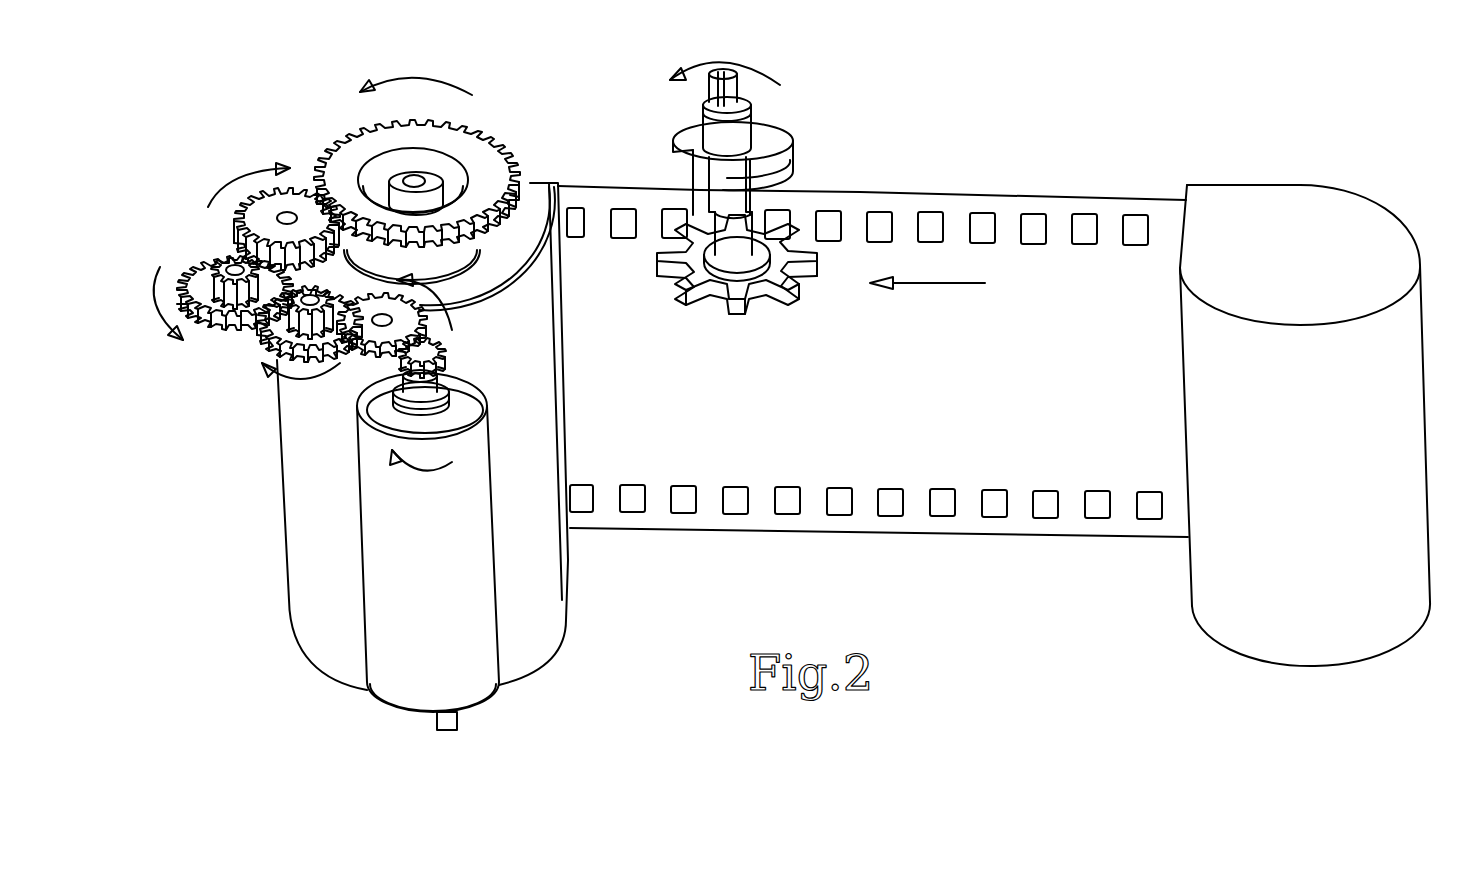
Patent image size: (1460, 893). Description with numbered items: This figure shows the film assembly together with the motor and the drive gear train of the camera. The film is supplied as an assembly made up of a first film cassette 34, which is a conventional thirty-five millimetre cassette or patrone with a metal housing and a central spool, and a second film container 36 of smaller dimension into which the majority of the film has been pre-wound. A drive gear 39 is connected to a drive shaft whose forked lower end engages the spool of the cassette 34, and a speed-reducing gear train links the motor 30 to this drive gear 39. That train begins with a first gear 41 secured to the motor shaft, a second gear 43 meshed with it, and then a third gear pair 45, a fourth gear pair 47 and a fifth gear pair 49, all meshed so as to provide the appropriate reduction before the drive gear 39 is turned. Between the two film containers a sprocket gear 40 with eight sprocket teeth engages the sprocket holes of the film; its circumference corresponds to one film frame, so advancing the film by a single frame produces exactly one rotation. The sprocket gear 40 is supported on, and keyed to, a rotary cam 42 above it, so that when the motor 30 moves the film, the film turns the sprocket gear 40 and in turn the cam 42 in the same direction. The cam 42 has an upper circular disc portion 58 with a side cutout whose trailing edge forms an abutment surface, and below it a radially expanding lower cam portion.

The motor 30 is at (410, 615).
The first film cassette 34 is at (528, 643).
The second film container 36 is at (1287, 645).
The drive gear 39 is at (353, 147).
The sprocket gear 40 is at (775, 290).
The first gear 41 is at (433, 362).
The rotary cam 42 is at (773, 147).
The second gear 43 is at (380, 333).
The third gear pair 45 is at (263, 348).
The fourth gear pair 47 is at (195, 292).
The fifth gear pair 49 is at (270, 228).
The upper circular disc portion 58 is at (777, 130).